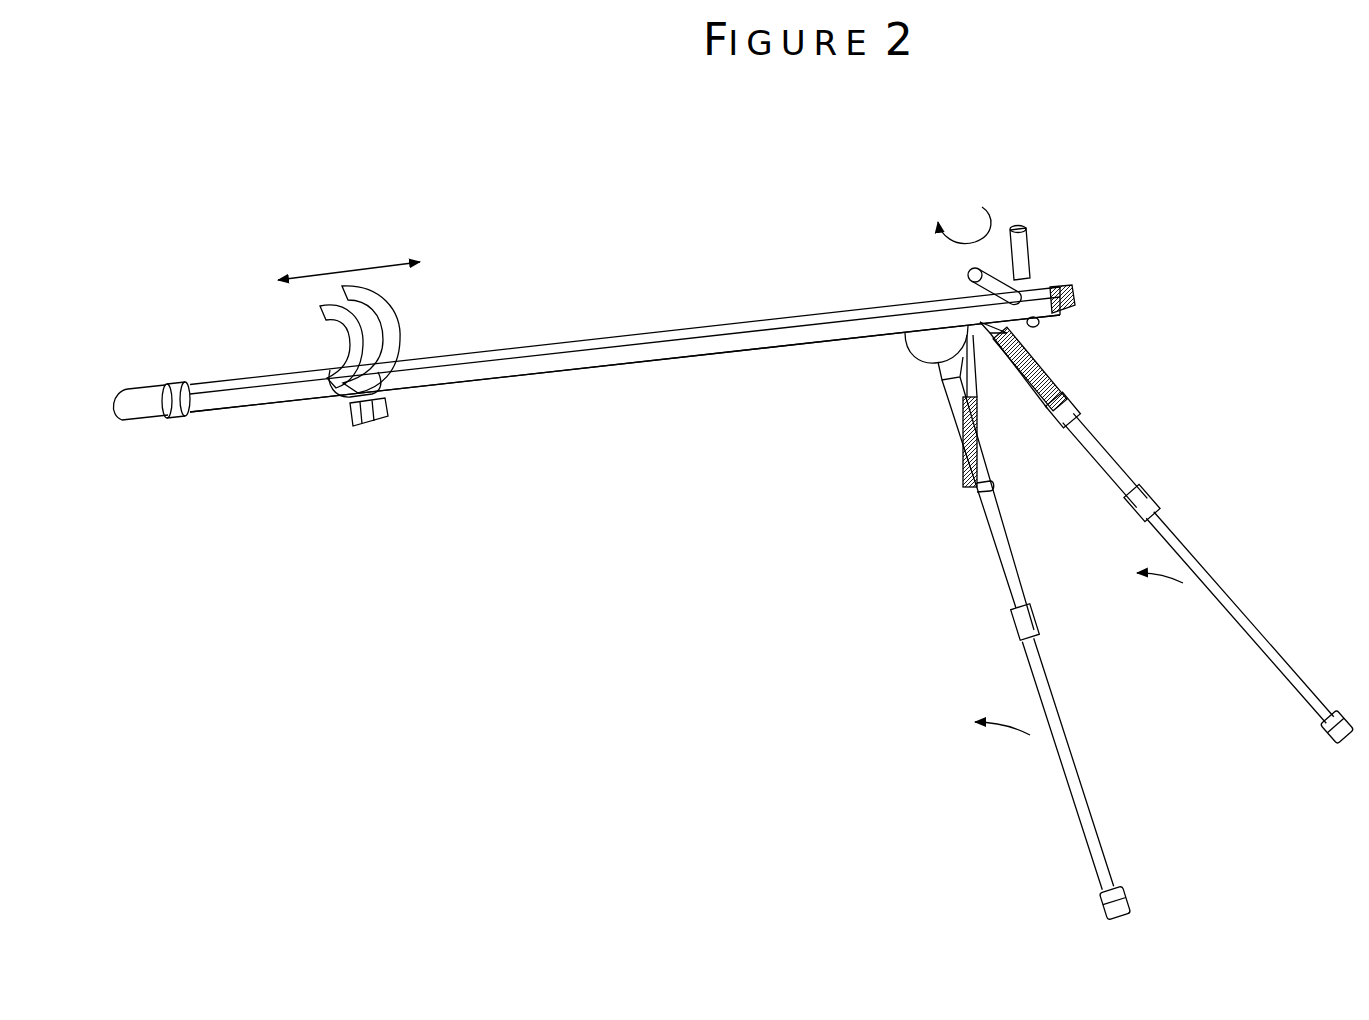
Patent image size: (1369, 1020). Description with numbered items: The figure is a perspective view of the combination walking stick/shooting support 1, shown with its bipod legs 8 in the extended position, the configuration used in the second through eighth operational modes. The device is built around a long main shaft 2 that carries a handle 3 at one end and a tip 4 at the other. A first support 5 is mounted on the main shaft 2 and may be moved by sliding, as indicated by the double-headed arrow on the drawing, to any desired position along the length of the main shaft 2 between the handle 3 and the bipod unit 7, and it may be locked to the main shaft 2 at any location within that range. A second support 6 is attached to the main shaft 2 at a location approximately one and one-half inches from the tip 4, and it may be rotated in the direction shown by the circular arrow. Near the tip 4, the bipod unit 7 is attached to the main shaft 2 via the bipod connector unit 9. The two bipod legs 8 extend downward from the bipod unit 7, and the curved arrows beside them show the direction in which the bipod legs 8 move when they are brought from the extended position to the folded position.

The combination walking stick/shooting support 1 is at (611, 306).
The main shaft 2 is at (537, 365).
The handle 3 is at (130, 398).
The tip 4 is at (1070, 308).
The first support 5 is at (340, 320).
The second support 6 is at (1020, 250).
The bipod unit 7 is at (910, 366).
The bipod legs 8 is at (1247, 620).
The bipod connector unit 9 is at (920, 300).